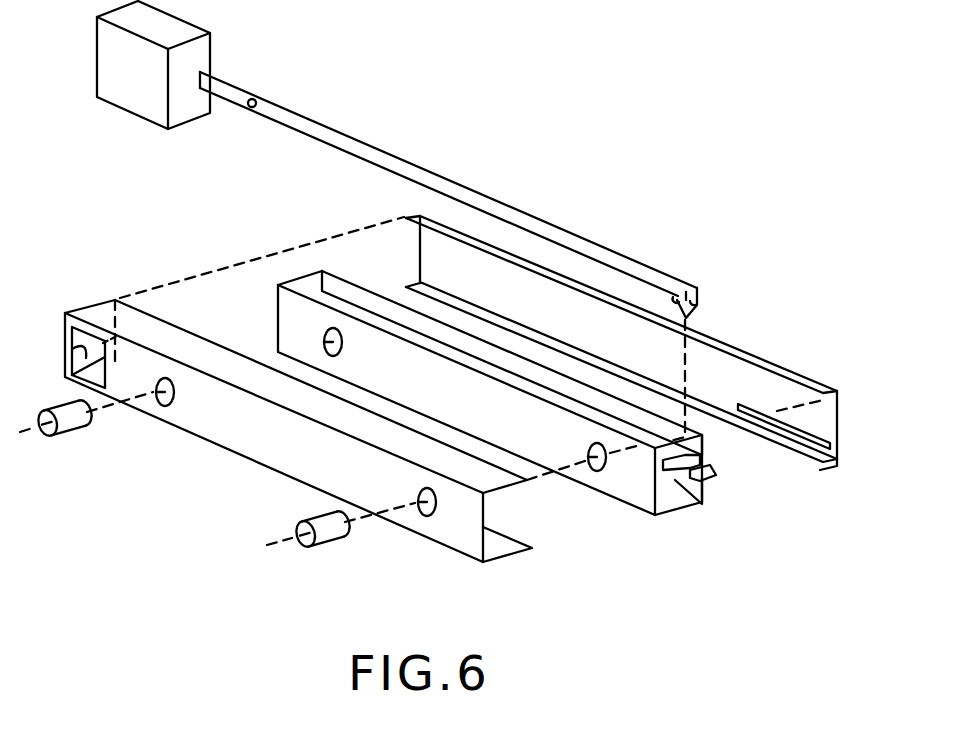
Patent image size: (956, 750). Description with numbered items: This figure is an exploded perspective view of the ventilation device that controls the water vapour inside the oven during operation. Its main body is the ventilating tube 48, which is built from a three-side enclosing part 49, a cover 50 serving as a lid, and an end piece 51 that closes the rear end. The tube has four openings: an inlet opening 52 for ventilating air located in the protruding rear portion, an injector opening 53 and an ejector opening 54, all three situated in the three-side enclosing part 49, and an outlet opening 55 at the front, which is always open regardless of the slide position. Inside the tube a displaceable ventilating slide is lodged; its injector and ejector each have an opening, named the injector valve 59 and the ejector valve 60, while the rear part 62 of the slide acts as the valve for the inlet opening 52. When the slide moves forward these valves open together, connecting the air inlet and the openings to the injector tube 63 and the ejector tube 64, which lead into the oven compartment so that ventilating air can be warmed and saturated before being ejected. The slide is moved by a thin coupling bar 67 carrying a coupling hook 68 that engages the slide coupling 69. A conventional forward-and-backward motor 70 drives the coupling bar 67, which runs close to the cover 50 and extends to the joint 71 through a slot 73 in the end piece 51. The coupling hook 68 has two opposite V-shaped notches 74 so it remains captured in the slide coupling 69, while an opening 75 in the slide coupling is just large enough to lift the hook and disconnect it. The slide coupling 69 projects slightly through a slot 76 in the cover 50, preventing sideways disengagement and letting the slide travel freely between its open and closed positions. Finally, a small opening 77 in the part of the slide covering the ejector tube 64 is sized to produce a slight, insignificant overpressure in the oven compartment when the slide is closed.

The ventilating tube 48 is at (173, 278).
The three-side enclosing part 49 is at (243, 459).
The cover 50 is at (800, 382).
The end piece 51 is at (75, 352).
The inlet opening 52 is at (83, 368).
The injector opening 53 is at (165, 407).
The ejector opening 54 is at (426, 517).
The outlet opening 55 is at (502, 523).
The injector valve 59 is at (331, 328).
The ejector valve 60 is at (599, 472).
The rear part 62 is at (277, 313).
The injector tube 63 is at (48, 437).
The ejector tube 64 is at (305, 548).
The coupling bar 67 is at (518, 208).
The coupling hook 68 is at (689, 300).
The slide coupling 69 is at (698, 462).
The motor 70 is at (192, 50).
The joint 71 is at (256, 100).
The slot 73 is at (110, 335).
The notches 74 is at (676, 298).
The opening 75 is at (703, 483).
The slot 76 is at (837, 442).
The small opening 77 is at (633, 473).